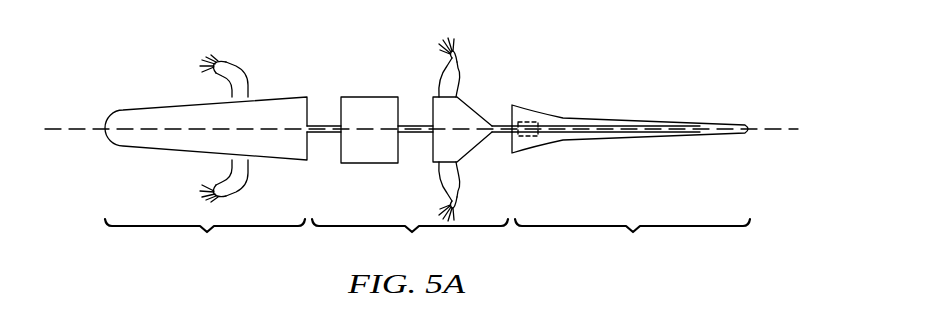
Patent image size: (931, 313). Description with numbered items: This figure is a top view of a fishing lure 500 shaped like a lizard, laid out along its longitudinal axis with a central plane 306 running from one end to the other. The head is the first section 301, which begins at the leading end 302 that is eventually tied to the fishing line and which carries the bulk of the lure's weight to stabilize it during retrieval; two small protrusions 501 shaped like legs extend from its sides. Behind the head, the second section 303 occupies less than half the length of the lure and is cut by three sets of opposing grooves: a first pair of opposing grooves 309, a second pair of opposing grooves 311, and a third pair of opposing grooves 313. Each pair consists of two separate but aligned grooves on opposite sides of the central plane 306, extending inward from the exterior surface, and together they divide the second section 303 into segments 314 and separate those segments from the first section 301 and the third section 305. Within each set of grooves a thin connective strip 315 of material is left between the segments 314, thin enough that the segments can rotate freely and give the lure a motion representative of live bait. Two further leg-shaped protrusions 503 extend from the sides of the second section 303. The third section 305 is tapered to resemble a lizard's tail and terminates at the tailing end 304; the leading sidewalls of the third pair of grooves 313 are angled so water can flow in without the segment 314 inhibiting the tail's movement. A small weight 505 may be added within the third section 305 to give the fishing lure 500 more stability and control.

The fishing lure 500 is at (284, 59).
The first section 301 is at (181, 156).
The leading end 302 is at (108, 121).
The second section 303 is at (440, 141).
The tailing end 304 is at (750, 132).
The third section 305 is at (652, 161).
The central plane 306 is at (788, 126).
The first pair of opposing grooves 309 is at (325, 158).
The second pair of opposing grooves 311 is at (416, 158).
The third pair of opposing grooves 313 is at (495, 150).
The segment 314 is at (367, 97).
The connective strip 315 is at (322, 124).
The protrusions 501 is at (248, 176).
The protrusions 503 is at (466, 192).
The weight 505 is at (530, 121).